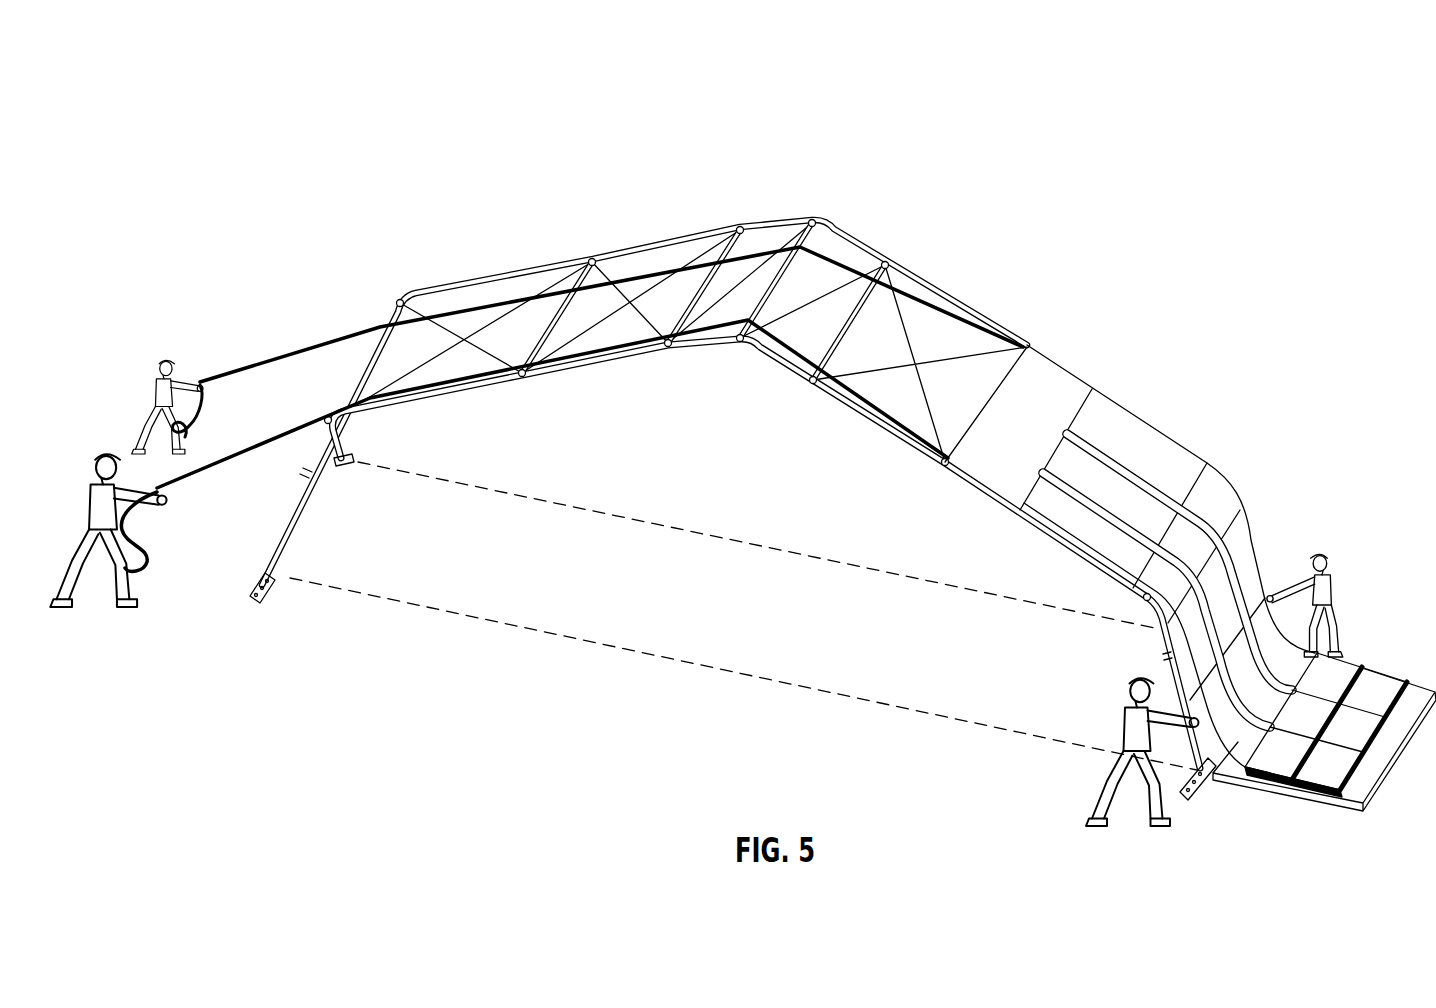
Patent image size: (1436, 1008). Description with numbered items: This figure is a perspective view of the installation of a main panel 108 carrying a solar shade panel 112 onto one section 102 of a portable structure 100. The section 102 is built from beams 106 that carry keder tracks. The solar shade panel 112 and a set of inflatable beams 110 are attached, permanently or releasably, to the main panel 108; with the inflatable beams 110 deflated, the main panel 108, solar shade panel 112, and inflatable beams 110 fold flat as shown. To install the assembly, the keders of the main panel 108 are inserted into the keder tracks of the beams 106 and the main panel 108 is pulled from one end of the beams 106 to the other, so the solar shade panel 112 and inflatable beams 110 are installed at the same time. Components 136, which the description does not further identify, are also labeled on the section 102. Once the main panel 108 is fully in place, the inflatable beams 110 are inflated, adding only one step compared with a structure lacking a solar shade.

The portable structure 100 is at (346, 96).
The section 102 is at (1086, 234).
The beams 106 is at (847, 236).
The main panel 108 is at (1044, 434).
The inflatable beams 110 is at (1130, 530).
The solar shade panel 112 is at (1098, 408).
The cross braces 136 is at (572, 298).